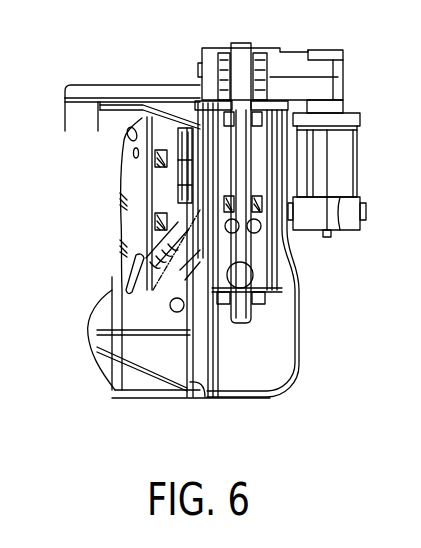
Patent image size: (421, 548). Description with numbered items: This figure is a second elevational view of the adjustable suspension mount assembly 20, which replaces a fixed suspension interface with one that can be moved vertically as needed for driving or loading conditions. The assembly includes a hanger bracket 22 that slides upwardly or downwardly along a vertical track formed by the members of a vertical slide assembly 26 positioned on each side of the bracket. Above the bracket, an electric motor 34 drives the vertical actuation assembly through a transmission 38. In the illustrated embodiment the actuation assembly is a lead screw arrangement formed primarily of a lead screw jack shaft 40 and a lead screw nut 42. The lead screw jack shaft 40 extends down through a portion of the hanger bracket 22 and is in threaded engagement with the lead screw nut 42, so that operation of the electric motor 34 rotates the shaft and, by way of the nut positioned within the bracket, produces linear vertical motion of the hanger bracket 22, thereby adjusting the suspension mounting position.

The adjustable suspension mount assembly 20 is at (167, 70).
The hanger bracket 22 is at (118, 343).
The vertical slide assembly 26 is at (258, 253).
The electric motor 34 is at (343, 160).
The transmission 38 is at (297, 68).
The lead screw jack shaft 40 is at (243, 278).
The lead screw nut 42 is at (258, 308).